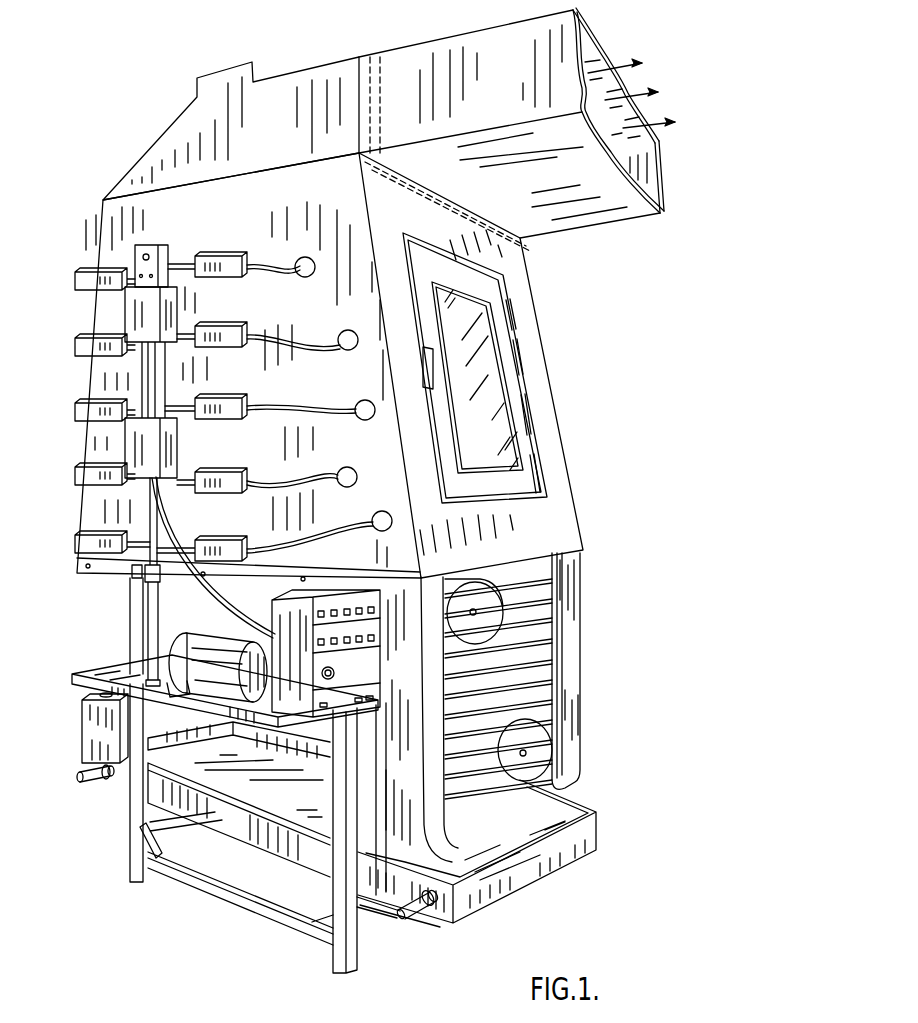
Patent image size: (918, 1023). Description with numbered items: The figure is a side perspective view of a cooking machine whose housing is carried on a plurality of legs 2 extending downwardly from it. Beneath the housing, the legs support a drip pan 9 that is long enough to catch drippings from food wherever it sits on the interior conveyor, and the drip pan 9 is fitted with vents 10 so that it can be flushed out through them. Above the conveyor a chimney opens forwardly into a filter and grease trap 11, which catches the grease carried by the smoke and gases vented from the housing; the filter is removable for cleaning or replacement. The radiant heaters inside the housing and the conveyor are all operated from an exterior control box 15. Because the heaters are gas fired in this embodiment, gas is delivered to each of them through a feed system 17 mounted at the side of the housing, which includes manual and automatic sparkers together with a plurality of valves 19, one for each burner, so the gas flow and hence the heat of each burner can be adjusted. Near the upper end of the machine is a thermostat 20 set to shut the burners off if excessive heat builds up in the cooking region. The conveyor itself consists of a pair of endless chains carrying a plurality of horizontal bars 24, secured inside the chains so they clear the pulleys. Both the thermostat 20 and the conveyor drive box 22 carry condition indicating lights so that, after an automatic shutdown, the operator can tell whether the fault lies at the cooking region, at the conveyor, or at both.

The legs 2 is at (148, 877).
The drip pan 9 is at (573, 847).
The vents 10 is at (102, 787).
The filter and grease trap 11 is at (376, 62).
The exterior control box 15 is at (370, 667).
The feed system 17 is at (168, 392).
The valves 19 is at (75, 283).
The thermostat 20 is at (158, 248).
The conveyor drive box 22 is at (83, 726).
The horizontal bars 24 is at (540, 620).